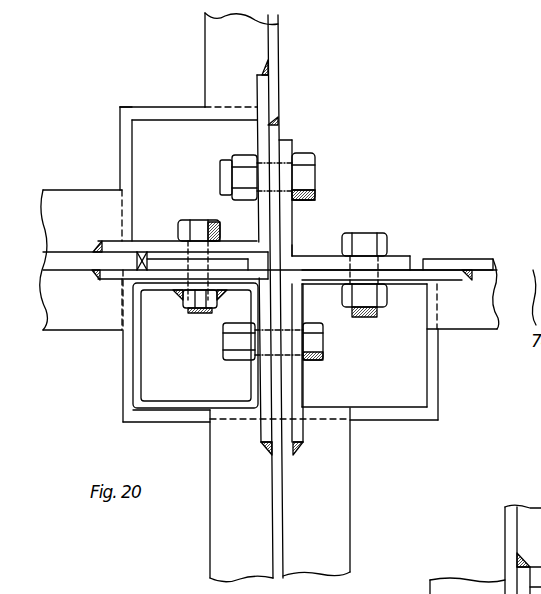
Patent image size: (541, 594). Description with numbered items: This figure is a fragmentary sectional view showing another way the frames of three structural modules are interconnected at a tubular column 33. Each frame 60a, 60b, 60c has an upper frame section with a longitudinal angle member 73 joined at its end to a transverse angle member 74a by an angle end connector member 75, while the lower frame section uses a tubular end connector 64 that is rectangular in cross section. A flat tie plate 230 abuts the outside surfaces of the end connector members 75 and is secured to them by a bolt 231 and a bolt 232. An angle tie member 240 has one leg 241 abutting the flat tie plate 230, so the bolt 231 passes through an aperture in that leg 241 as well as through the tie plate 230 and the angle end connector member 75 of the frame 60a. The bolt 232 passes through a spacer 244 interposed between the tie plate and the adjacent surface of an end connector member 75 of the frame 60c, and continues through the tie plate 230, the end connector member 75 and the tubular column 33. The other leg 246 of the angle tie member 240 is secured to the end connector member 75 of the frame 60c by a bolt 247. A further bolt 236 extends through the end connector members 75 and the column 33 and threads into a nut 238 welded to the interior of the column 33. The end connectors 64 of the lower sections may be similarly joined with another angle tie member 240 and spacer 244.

The tubular column 33 is at (137, 365).
The frame 60a is at (131, 86).
The frame 60b is at (108, 435).
The frame 60c is at (407, 427).
The tubular end connector 64 is at (135, 108).
The longitudinal angle member 73 is at (273, 40).
The transverse angle member 74a is at (72, 169).
The angle end connector member 75 is at (105, 240).
The flat tie plate 230 is at (283, 140).
The bolt 231 is at (303, 178).
The bolt 232 is at (315, 345).
The bolt 236 is at (190, 220).
The nut 238 is at (184, 300).
The angle tie member 240 is at (307, 250).
The leg of angle tie member 241 is at (287, 210).
The spacer 244 is at (288, 382).
The other leg of angle tie member 246 is at (397, 256).
The bolt 247 is at (370, 247).